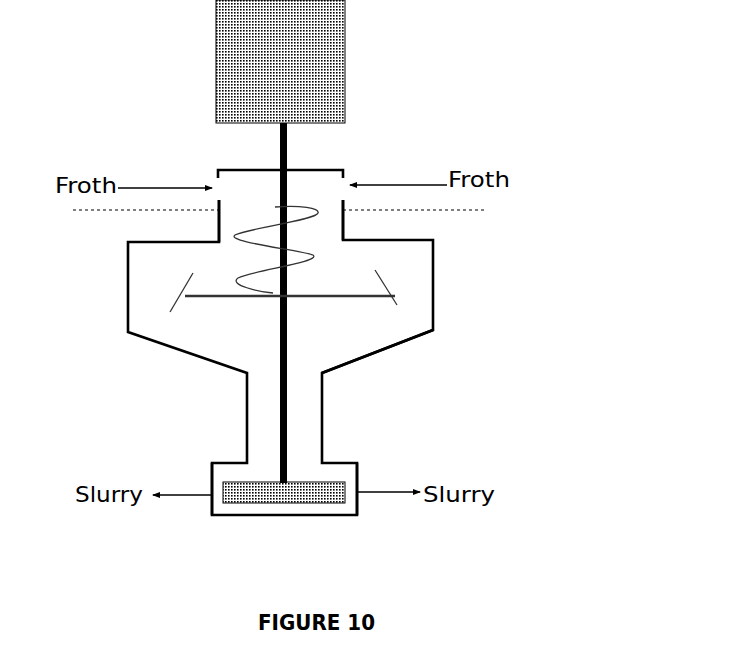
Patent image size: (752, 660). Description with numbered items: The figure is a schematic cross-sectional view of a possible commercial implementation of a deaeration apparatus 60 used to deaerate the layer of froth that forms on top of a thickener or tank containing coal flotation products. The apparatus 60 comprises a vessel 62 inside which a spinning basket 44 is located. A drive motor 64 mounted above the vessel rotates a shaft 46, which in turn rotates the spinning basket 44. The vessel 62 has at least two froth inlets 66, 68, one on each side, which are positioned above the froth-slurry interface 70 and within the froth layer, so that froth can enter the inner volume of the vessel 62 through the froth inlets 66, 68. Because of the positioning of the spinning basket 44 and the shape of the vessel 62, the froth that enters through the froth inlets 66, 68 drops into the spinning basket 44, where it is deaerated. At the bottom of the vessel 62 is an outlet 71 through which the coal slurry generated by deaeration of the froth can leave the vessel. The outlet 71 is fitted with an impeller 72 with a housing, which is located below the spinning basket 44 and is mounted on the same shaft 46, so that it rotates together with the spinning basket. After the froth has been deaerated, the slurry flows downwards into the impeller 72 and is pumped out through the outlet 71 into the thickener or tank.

The spinning basket 44 is at (213, 293).
The shaft 46 is at (295, 148).
The apparatus 60 is at (503, 310).
The vessel 62 is at (408, 342).
The drive motor 64 is at (207, 60).
The froth inlet 66 is at (217, 198).
The froth inlet 68 is at (352, 184).
The froth-slurry interface 70 is at (487, 208).
The outlet 71 is at (197, 505).
The impeller 72 is at (360, 468).